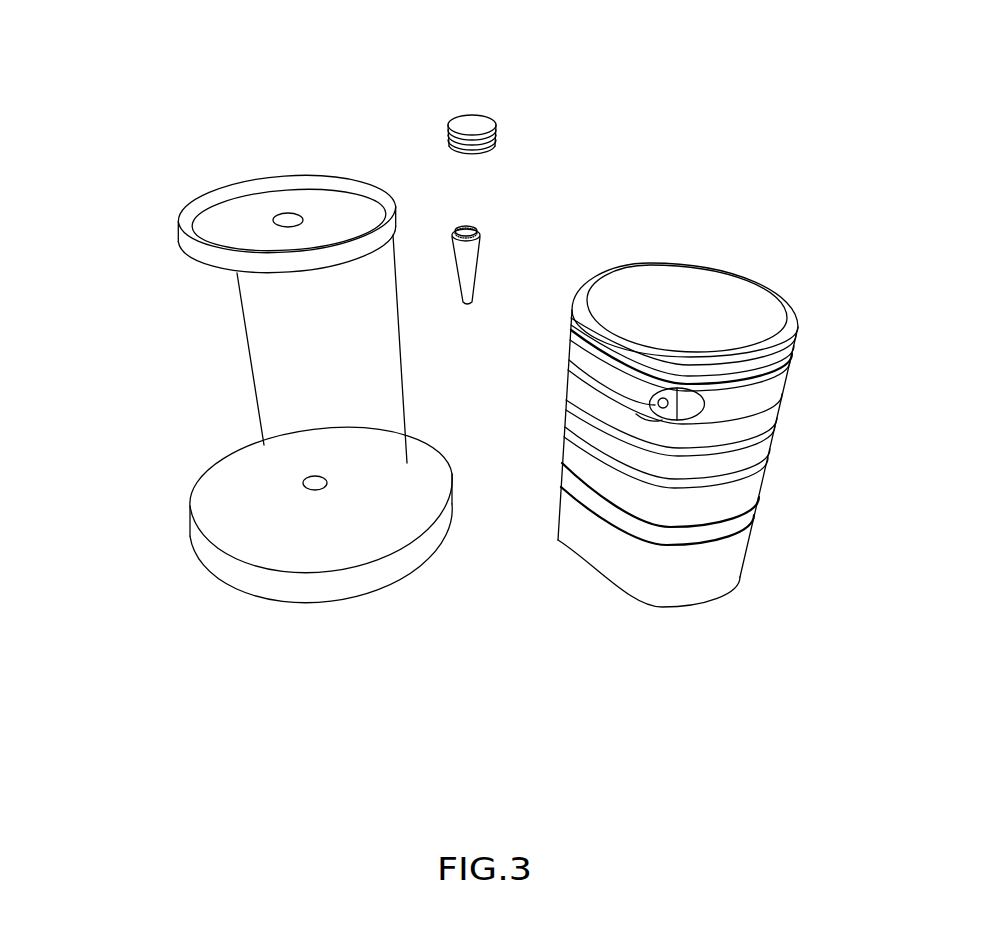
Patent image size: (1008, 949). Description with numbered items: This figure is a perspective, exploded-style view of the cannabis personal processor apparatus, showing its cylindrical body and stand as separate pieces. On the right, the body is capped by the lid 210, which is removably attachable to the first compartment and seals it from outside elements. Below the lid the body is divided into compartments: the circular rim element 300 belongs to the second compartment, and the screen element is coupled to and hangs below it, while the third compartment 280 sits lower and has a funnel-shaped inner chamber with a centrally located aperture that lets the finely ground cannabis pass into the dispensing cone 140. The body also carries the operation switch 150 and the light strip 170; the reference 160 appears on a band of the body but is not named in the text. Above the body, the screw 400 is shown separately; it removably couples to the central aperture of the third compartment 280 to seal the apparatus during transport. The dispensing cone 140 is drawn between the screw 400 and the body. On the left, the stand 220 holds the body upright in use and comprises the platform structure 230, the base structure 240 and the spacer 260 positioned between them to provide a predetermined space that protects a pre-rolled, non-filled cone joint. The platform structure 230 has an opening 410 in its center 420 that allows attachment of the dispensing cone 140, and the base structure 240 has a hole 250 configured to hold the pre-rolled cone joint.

The dispensing cone 140 is at (483, 240).
The operation switch 150 is at (700, 405).
The upper ring 160 is at (573, 397).
The light strip 170 is at (767, 460).
The lid 210 is at (612, 283).
The stand 220 is at (150, 287).
The platform structure 230 is at (228, 205).
The base structure 240 is at (204, 550).
The hole 250 is at (323, 488).
The spacer 260 is at (303, 374).
The third compartment 280 is at (732, 565).
The circular rim element 300 is at (563, 477).
The screw 400 is at (500, 113).
The opening 410 is at (283, 218).
The center 420 is at (257, 212).